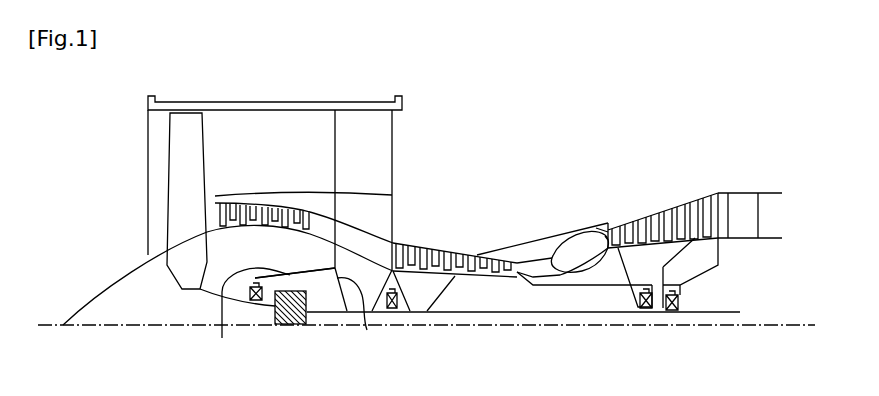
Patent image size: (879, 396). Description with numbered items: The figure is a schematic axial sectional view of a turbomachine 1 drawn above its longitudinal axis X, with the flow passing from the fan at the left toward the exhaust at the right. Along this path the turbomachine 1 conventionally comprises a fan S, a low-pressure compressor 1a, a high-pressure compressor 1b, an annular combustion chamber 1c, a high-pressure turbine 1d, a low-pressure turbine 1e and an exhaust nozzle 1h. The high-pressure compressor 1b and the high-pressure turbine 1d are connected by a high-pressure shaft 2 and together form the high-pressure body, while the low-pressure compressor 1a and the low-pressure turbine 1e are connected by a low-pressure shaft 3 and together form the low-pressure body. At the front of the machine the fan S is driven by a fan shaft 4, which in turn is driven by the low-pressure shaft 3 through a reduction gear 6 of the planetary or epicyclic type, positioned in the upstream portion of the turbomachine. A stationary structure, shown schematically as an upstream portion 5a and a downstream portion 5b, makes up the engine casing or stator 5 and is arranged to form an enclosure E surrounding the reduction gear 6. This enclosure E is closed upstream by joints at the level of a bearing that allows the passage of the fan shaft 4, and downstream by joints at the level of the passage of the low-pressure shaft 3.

The turbomachine 1 is at (505, 133).
The low-pressure compressor 1a is at (238, 206).
The high-pressure compressor 1b is at (423, 252).
The annular combustion chamber 1c is at (567, 252).
The high-pressure turbine 1d is at (611, 232).
The low-pressure turbine 1e is at (718, 204).
The exhaust nozzle 1h is at (768, 212).
The high-pressure shaft 2 is at (560, 287).
The low-pressure shaft 3 is at (483, 316).
The fan shaft 4 is at (238, 297).
The engine casing or stator 5 is at (323, 257).
The upstream portion 5a is at (245, 315).
The downstream portion 5b is at (367, 330).
The reduction gear 6 is at (285, 313).
The enclosure E is at (318, 297).
The fan S is at (178, 161).
The rotation axis X is at (63, 325).